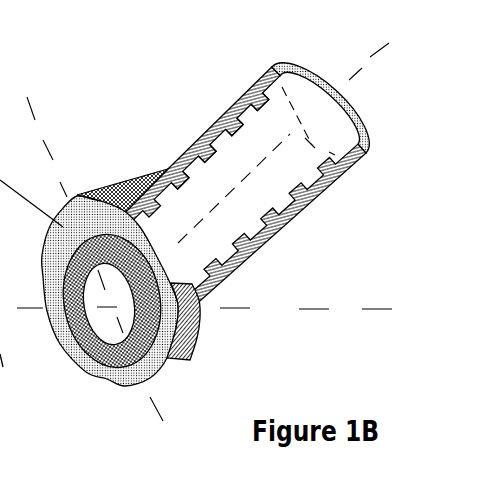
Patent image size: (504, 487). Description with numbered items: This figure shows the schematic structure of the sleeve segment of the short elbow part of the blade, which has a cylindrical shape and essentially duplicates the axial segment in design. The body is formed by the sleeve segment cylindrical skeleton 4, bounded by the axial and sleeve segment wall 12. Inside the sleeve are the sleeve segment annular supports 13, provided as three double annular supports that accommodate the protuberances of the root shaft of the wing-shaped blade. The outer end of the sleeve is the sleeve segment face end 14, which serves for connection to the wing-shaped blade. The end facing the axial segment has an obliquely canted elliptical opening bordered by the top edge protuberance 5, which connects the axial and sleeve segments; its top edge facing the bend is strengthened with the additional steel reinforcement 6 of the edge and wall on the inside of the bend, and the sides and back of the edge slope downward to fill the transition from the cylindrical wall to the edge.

The sleeve segment cylindrical skeleton 4 is at (298, 218).
The top edge protuberance 5 is at (190, 317).
The additional steel reinforcement 6 is at (130, 185).
The axial and sleeve segment wall 12 is at (123, 354).
The sleeve segment annular supports 13 is at (195, 143).
The sleeve segment face end 14 is at (352, 113).